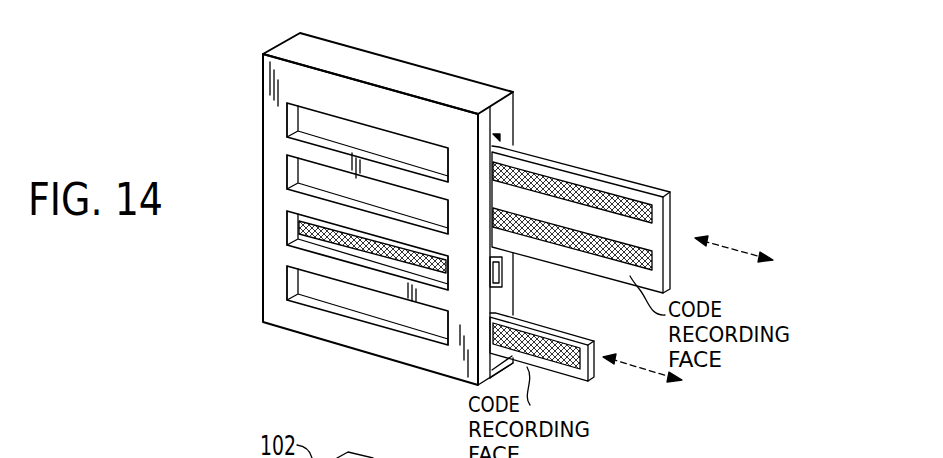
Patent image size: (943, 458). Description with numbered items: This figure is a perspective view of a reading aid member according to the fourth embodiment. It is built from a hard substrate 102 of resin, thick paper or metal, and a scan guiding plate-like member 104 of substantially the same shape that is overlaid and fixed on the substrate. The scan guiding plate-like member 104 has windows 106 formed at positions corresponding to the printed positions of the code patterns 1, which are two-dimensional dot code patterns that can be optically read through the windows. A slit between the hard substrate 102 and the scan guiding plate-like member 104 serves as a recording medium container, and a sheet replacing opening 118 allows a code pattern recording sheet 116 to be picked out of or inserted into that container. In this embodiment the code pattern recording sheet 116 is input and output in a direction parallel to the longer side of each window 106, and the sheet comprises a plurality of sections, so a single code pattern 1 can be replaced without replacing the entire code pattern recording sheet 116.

The code pattern 1 is at (288, 223).
The hard substrate 102 is at (403, 65).
The scan guiding plate-like member 104 is at (278, 70).
The window 106 is at (288, 117).
The code pattern recording sheet 116 is at (615, 187).
The sheet replacing opening 118 is at (500, 140).